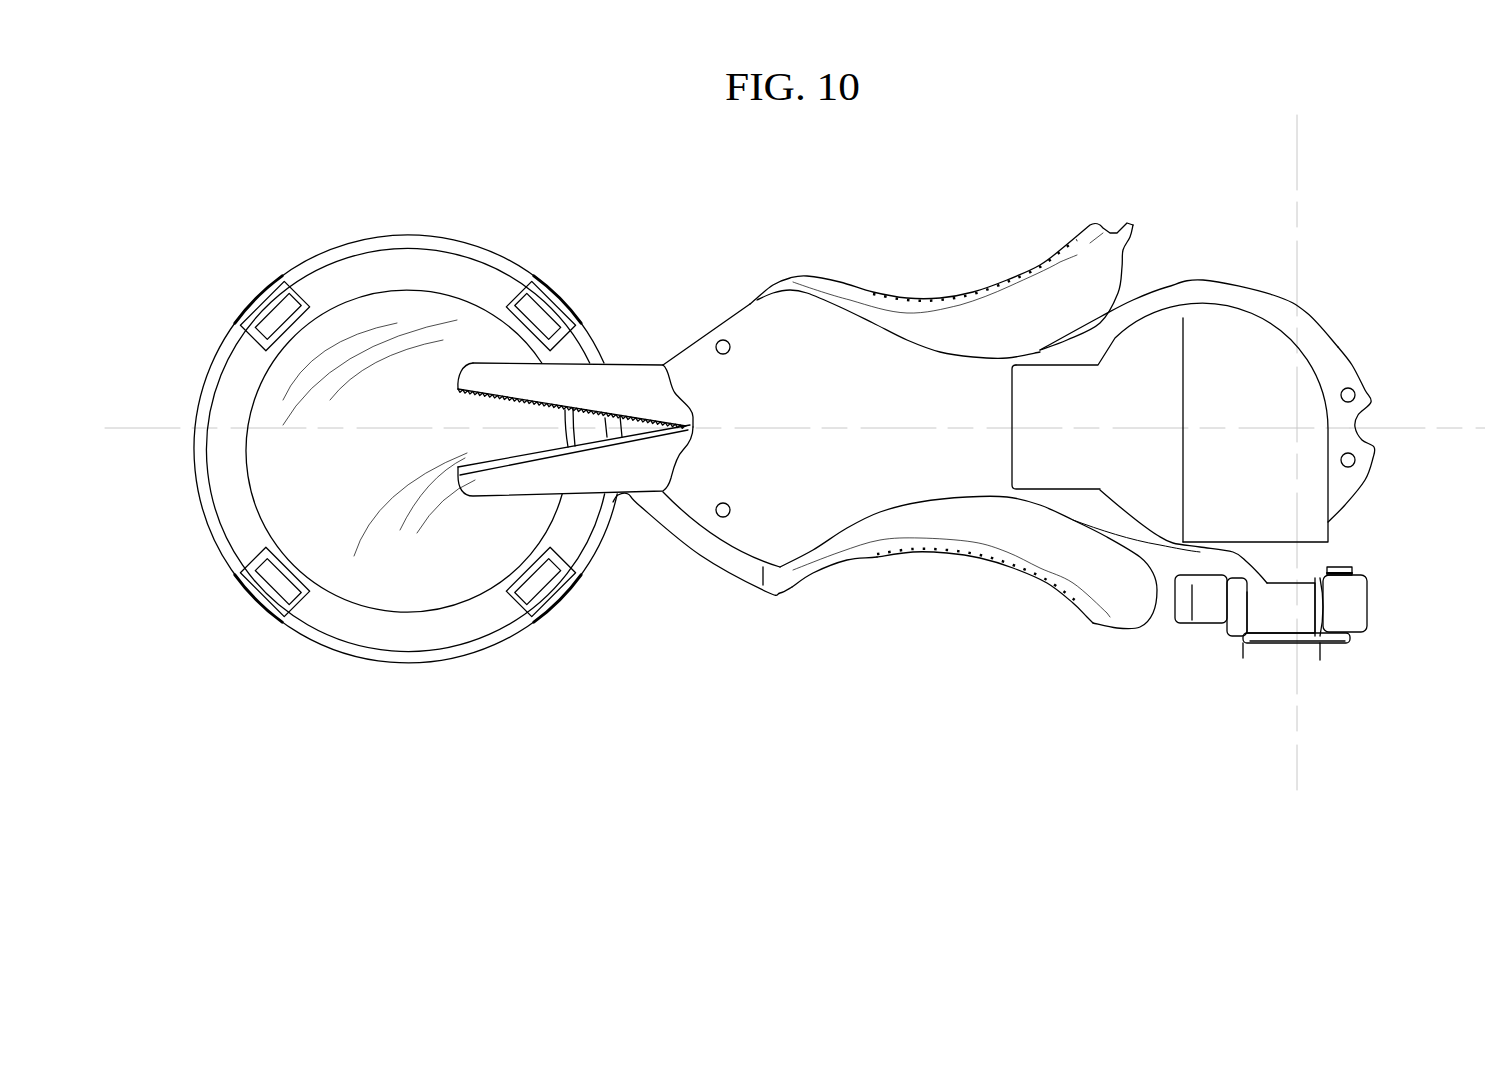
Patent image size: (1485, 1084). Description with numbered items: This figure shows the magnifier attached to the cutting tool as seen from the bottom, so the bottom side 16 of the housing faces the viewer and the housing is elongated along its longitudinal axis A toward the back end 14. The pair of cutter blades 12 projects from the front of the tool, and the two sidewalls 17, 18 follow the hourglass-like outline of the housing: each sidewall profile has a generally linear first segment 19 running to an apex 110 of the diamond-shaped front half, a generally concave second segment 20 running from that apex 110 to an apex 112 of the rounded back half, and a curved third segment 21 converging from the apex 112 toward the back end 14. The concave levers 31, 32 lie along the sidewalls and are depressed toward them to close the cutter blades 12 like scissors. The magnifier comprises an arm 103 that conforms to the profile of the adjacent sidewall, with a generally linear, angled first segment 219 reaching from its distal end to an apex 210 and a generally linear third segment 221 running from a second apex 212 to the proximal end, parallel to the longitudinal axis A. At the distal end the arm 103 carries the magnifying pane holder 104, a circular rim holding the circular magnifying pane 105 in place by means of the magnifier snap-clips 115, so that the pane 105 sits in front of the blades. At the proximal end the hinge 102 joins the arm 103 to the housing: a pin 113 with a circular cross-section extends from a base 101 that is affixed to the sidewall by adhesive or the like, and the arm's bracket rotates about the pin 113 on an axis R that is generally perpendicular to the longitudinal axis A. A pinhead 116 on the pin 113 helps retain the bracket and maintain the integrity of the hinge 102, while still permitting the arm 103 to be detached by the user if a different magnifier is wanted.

The cutter blades 12 is at (622, 377).
The back end 14 is at (1378, 457).
The bottom side 16 is at (1110, 337).
The sidewall 17 is at (990, 498).
The sidewall 18 is at (1190, 281).
The first segment 19 is at (733, 543).
The second segment 20 is at (917, 512).
The third segment 21 is at (1243, 658).
The lever 31 is at (1065, 583).
The lever 32 is at (988, 289).
The base 101 is at (1305, 381).
The hinge 102 is at (1345, 605).
The arm 103 is at (703, 538).
The magnifying pane holder 104 is at (238, 524).
The magnifying pane 105 is at (310, 385).
The apex 110 is at (788, 558).
The apex 112 is at (1218, 570).
The pin 113 is at (1322, 660).
The magnifier snap-clips 115 is at (573, 296).
The pinhead 116 is at (1352, 568).
The apex 210 is at (778, 595).
The apex 212 is at (1182, 562).
The first segment 219 is at (712, 570).
The third segment 221 is at (1237, 640).
The longitudinal axis A is at (1398, 428).
The axis R is at (1297, 762).